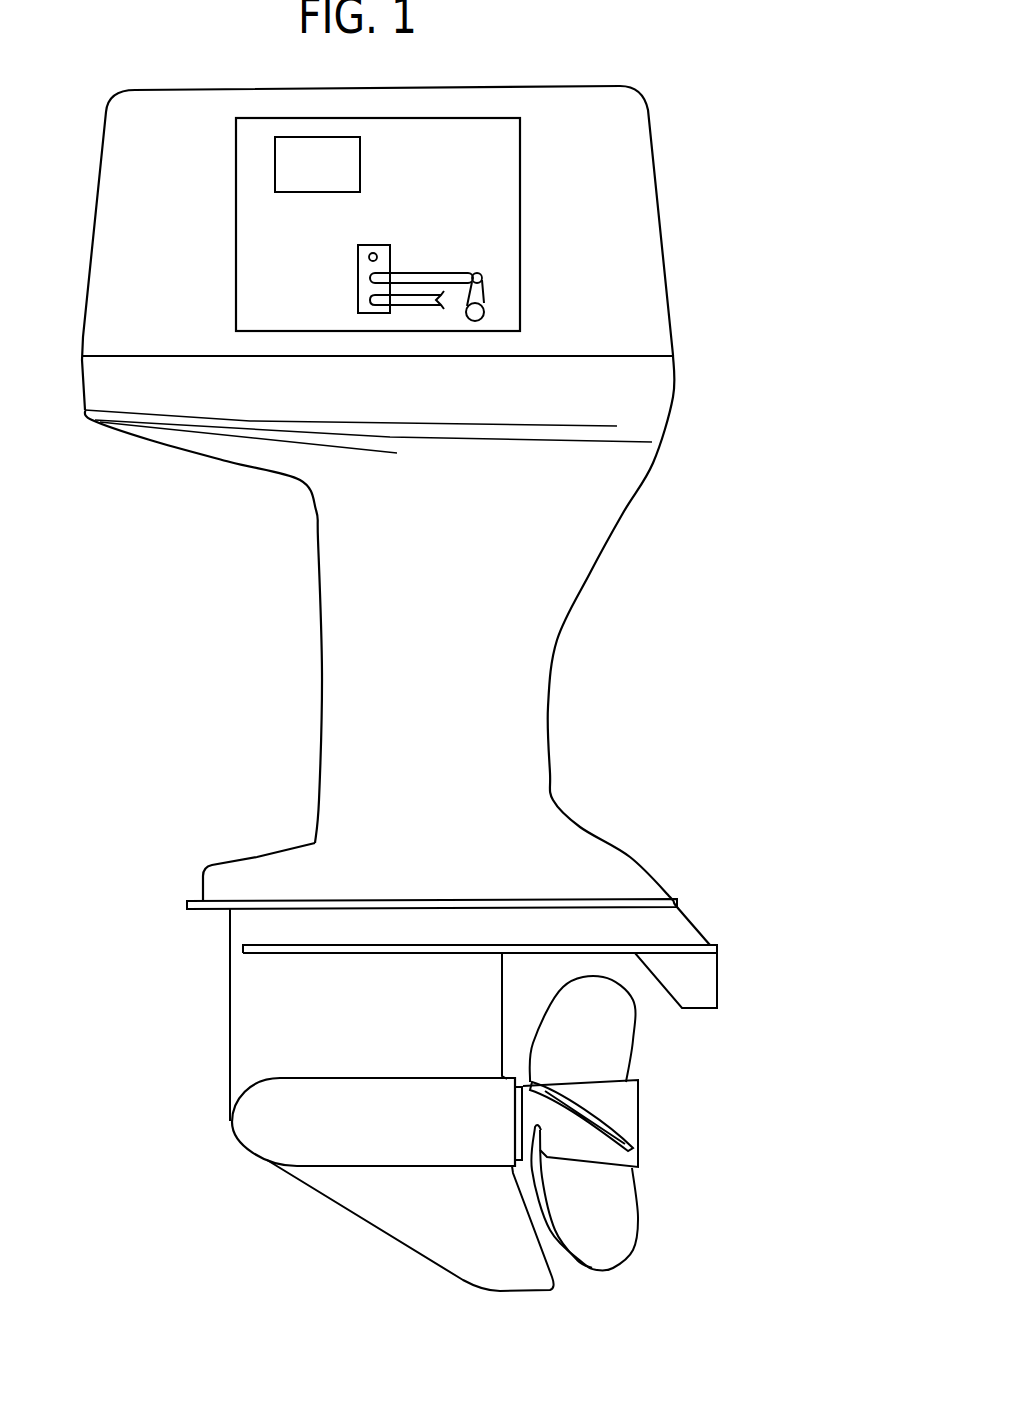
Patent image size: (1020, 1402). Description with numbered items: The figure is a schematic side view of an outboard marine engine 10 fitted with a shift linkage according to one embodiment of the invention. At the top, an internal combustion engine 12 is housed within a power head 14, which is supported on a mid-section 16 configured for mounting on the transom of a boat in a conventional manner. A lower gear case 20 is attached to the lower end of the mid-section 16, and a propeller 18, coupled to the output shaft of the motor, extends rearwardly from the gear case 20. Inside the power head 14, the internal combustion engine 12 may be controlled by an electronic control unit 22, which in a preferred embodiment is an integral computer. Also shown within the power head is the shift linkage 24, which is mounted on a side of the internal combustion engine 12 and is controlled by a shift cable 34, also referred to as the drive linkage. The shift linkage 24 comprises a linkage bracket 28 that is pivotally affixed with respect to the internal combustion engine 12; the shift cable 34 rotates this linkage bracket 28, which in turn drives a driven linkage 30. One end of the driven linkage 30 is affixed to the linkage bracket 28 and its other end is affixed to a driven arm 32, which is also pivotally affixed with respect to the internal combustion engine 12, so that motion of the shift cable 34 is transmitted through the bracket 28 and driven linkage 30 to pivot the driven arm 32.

The outboard marine engine 10 is at (707, 90).
The internal combustion engine 12 is at (237, 227).
The power head 14 is at (663, 250).
The mid-section 16 is at (448, 603).
The propeller 18 is at (607, 1032).
The lower gear case 20 is at (380, 1019).
The electronic control unit 22 is at (360, 158).
The shift linkage 24 is at (377, 233).
The linkage bracket 28 is at (358, 268).
The driven linkage 30 is at (438, 273).
The driven arm 32 is at (490, 293).
The shift cable 34 is at (418, 305).